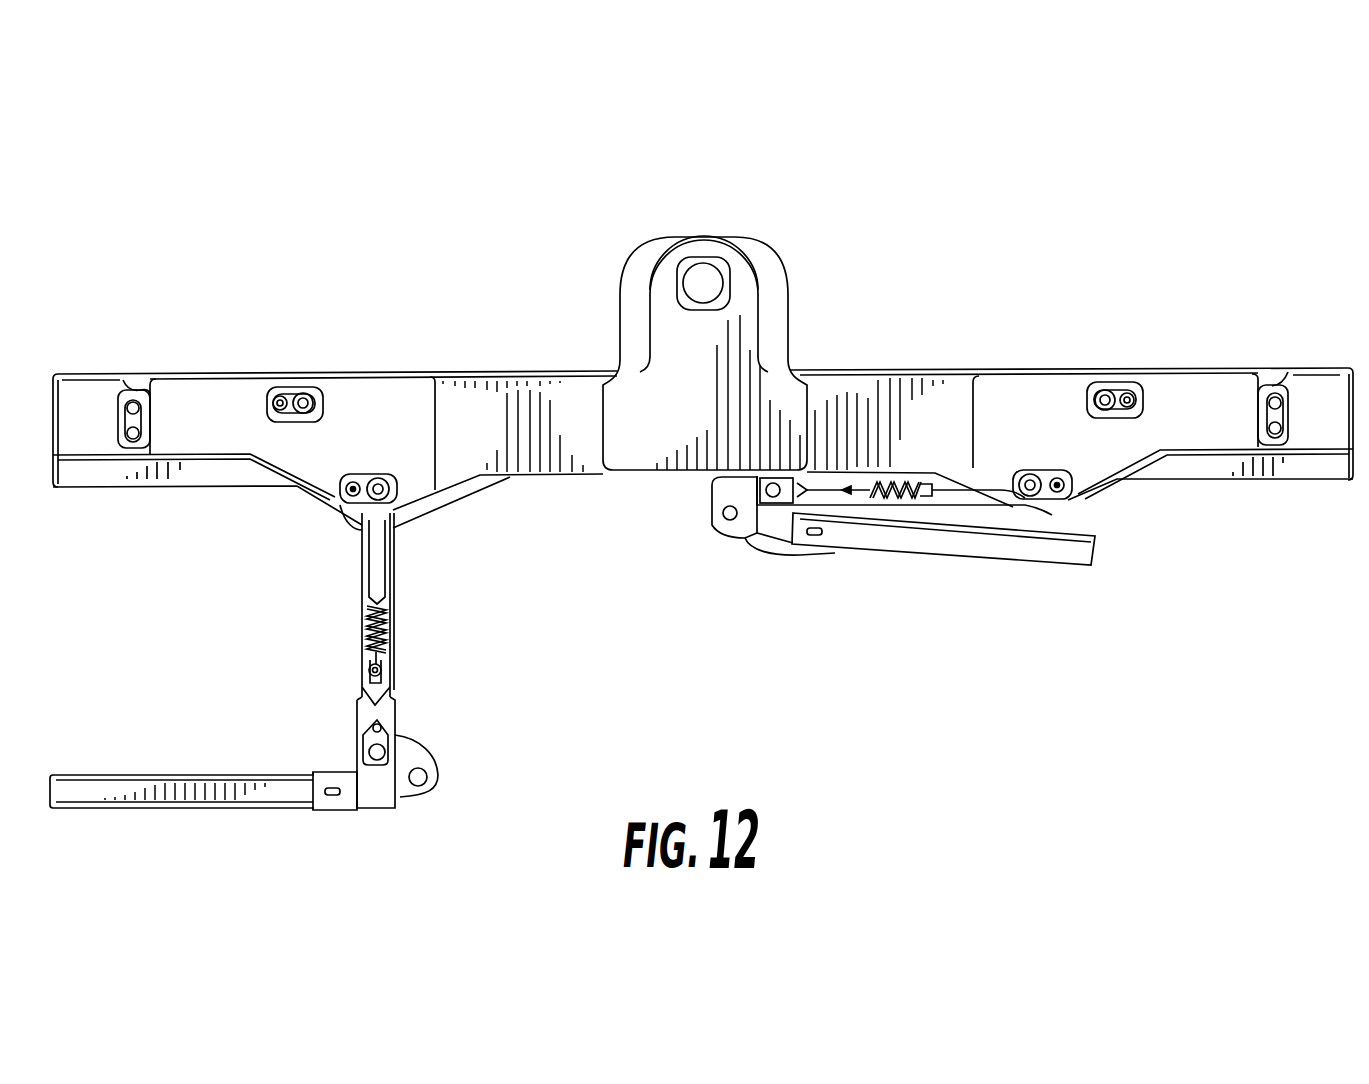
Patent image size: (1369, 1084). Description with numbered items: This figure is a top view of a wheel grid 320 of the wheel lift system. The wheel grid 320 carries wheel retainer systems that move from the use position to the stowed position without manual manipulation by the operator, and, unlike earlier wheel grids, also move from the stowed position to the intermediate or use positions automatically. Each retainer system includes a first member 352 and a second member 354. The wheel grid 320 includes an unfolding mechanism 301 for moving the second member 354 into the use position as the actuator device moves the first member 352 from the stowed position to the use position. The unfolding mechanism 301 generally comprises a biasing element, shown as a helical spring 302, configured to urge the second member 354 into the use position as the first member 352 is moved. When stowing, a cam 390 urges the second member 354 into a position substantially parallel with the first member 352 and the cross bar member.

The wheel grid 320 is at (1052, 240).
The helical spring 302 is at (891, 490).
The unfolding mechanism 301 is at (345, 651).
The first member 352 is at (393, 650).
The cam 390 is at (405, 805).
The second member 354 is at (220, 810).